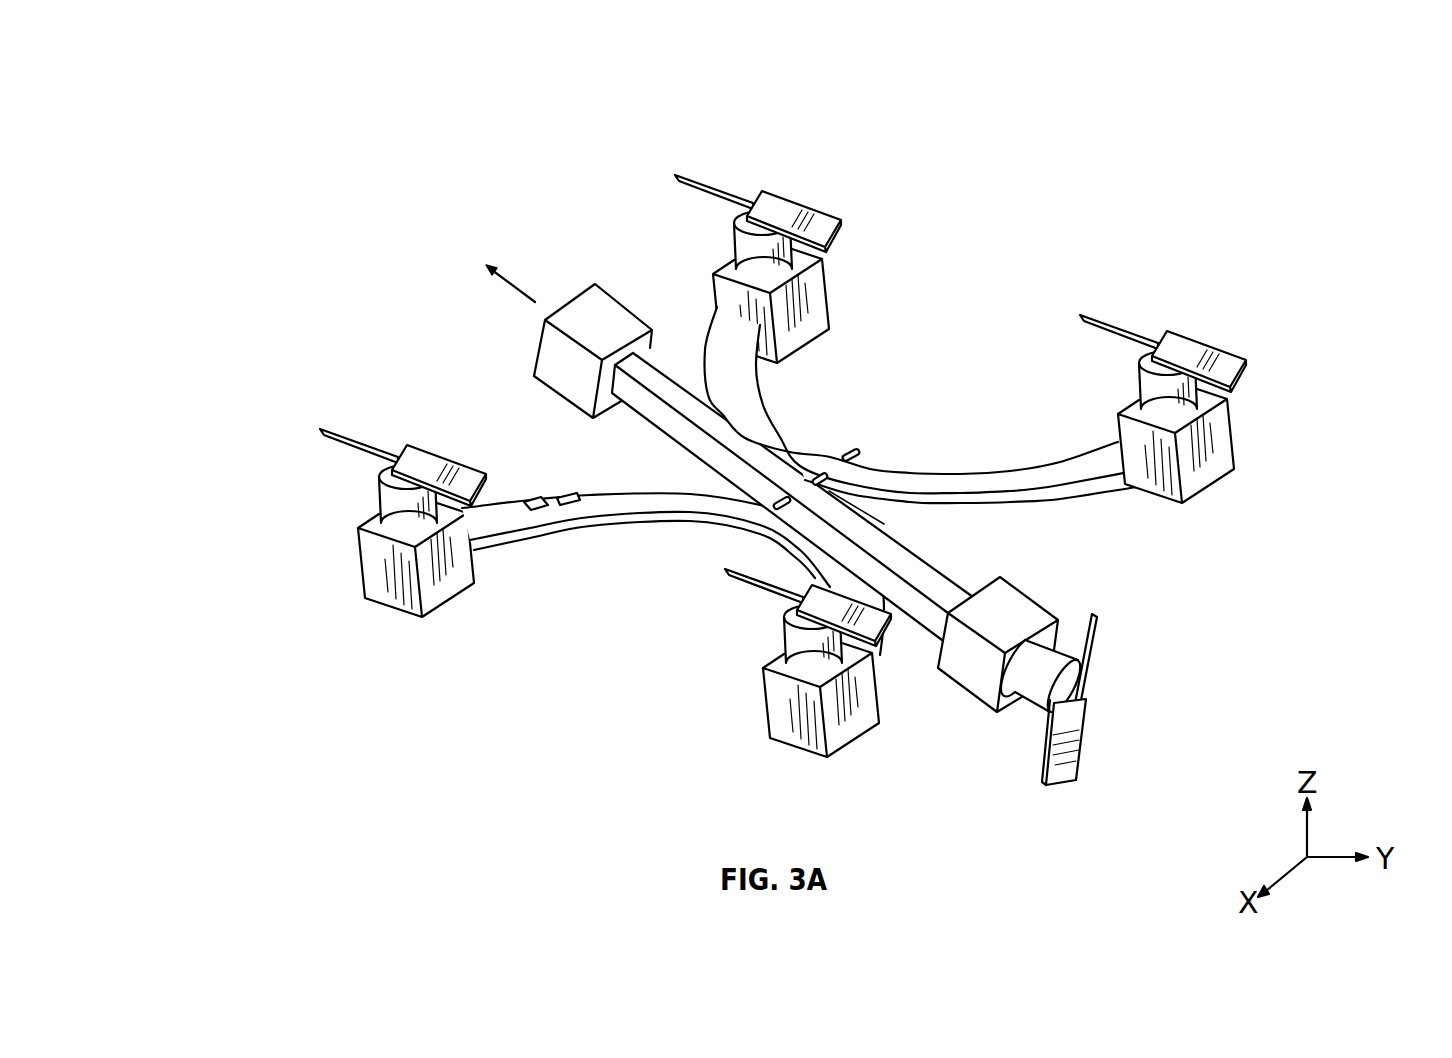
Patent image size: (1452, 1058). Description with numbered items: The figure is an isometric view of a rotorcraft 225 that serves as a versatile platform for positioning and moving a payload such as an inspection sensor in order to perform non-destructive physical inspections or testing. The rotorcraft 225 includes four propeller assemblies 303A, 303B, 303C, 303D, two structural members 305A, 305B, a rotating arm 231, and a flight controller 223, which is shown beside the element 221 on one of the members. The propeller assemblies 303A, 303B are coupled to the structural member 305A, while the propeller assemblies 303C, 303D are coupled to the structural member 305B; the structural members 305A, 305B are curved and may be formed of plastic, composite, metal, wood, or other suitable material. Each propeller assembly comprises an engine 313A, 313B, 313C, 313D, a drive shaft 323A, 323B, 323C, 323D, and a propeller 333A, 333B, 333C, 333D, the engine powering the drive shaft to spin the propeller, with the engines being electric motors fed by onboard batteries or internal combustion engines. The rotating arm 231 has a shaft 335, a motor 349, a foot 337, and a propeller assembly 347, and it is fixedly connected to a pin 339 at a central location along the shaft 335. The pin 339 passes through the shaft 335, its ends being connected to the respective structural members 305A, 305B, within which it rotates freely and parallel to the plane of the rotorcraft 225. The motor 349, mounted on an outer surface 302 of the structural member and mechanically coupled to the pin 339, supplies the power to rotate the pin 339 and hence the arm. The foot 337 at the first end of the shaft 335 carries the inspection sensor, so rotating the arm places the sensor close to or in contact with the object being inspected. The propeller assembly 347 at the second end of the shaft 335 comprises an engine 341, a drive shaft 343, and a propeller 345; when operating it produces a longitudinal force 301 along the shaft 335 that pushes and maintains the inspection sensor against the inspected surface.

The rotorcraft 225 is at (1138, 117).
The rotating arm 231 is at (555, 272).
The longitudinal force 301 is at (503, 283).
The outer surface 302 is at (833, 449).
The propeller assembly 303A is at (187, 408).
The propeller assembly 303B is at (648, 585).
The propeller assembly 303C is at (1345, 290).
The propeller assembly 303D is at (937, 115).
The structural member 305A is at (695, 521).
The structural member 305B is at (982, 470).
The engine 313A is at (360, 565).
The engine 313B is at (762, 699).
The engine 313C is at (1236, 437).
The engine 313D is at (832, 303).
The drive shaft 323A is at (381, 502).
The drive shaft 323B is at (781, 631).
The drive shaft 323C is at (1140, 387).
The drive shaft 323D is at (742, 248).
The propeller 333A is at (322, 434).
The propeller 333B is at (747, 585).
The propeller 333C is at (1221, 343).
The propeller 333D is at (794, 197).
The shaft 335 is at (934, 566).
The foot 337 is at (537, 354).
The pin 339 is at (821, 483).
The engine 341 is at (1025, 592).
The drive shaft 343 is at (1035, 711).
The propeller 345 is at (1086, 761).
The propeller assembly 347 is at (1176, 612).
The motor 349 is at (861, 452).
The sensor 221 is at (575, 494).
The flight controller 223 is at (533, 498).